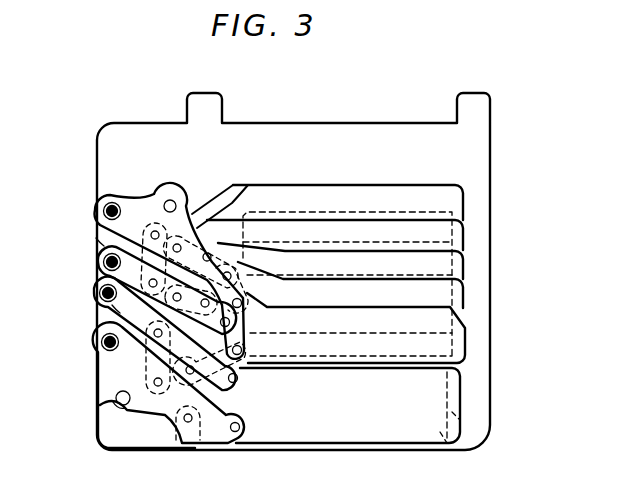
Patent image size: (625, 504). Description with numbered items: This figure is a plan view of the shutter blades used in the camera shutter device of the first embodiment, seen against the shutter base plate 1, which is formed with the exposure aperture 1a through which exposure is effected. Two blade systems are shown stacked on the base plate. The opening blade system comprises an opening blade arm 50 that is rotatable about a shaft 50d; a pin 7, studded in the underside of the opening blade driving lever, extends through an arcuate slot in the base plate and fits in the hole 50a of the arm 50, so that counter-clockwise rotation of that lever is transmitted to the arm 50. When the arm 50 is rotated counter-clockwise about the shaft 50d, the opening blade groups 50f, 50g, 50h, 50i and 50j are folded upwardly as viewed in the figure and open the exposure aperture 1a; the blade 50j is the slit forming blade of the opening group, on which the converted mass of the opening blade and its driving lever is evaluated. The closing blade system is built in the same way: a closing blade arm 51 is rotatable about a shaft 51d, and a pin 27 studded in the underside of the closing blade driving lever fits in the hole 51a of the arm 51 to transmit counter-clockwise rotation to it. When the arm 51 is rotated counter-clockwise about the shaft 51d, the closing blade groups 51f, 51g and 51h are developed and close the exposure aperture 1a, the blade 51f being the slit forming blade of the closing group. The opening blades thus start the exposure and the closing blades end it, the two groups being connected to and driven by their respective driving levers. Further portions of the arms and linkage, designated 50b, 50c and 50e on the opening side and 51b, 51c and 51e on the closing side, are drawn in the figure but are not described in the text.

The shutter base plate 1 is at (482, 127).
The exposure aperture 1a is at (414, 212).
The pin 7 is at (174, 200).
The pin 27 is at (122, 405).
The opening blade arm 50 is at (134, 208).
The hole 50a is at (186, 205).
The arm portion of plate 50 50b is at (268, 178).
The cam edge of plate 50 50c is at (100, 243).
The shaft 50d is at (104, 208).
The pivot of lever 50e is at (100, 263).
The opening blade 50f is at (455, 200).
The opening blade 50g is at (460, 244).
The opening blade 50h is at (460, 265).
The opening blade 50i is at (460, 317).
The slit forming blade 50j is at (460, 343).
The closing blade arm 51 is at (120, 370).
The hole 51a is at (117, 403).
The pin hole of plate 51 51b is at (188, 423).
The cam edge of plate 51 51c is at (115, 308).
The shaft 51d is at (105, 341).
The pivot of lever 51e is at (100, 297).
The slit forming blade 51f is at (460, 403).
The closing blade 51g is at (460, 418).
The closing blade 51h is at (432, 428).